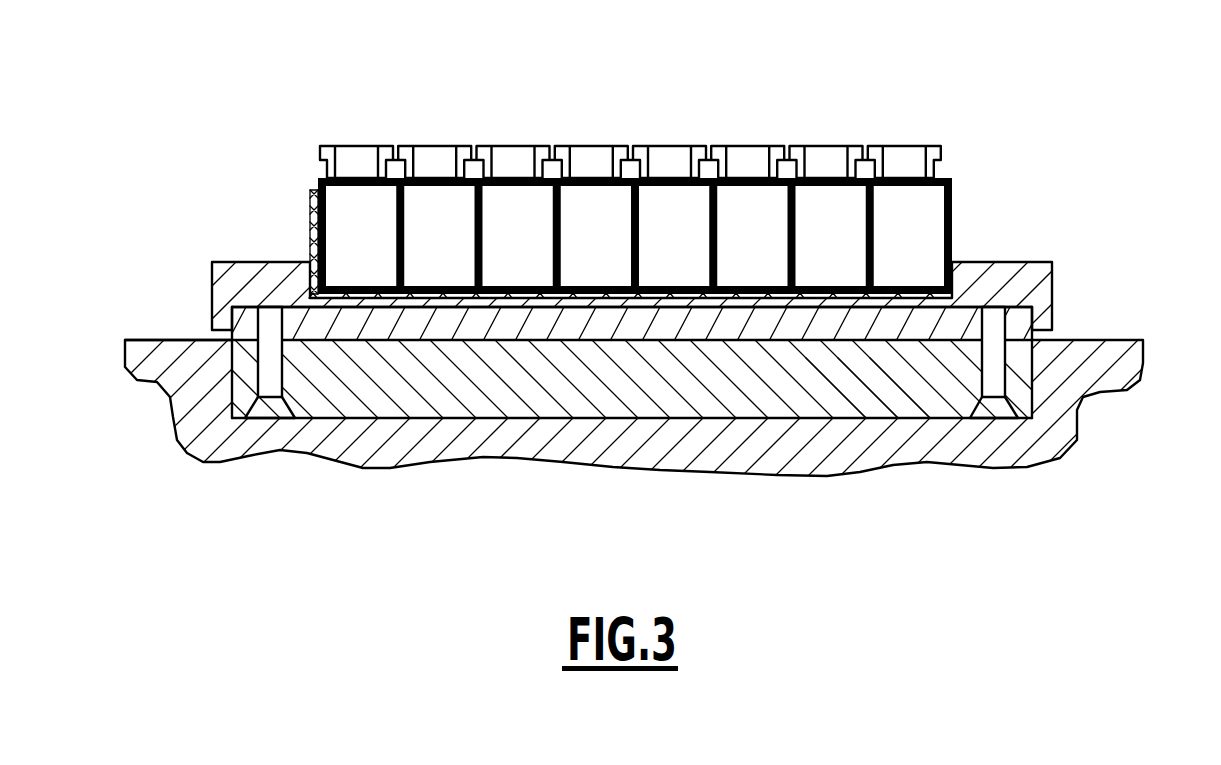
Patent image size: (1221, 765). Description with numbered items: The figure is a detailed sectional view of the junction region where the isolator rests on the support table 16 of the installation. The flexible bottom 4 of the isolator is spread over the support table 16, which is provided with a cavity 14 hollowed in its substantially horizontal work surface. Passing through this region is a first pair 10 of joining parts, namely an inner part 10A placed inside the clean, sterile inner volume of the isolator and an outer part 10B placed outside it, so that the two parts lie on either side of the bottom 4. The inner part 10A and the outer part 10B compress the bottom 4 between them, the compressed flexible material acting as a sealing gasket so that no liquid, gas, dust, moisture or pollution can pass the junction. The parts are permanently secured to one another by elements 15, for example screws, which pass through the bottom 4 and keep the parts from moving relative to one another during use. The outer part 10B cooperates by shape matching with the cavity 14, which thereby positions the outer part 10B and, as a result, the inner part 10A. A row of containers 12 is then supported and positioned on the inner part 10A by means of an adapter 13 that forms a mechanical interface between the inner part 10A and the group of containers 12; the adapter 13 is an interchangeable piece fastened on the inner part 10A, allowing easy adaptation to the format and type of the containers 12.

The bottom 4 is at (187, 340).
The first pair of joining parts 10 is at (668, 289).
The inner part 10A is at (1018, 327).
The outer part 10B is at (640, 343).
The containers 12 is at (903, 146).
The adapter 13 is at (250, 270).
The cavity 14 is at (886, 412).
The elements 15 is at (273, 372).
The support table 16 is at (1117, 370).